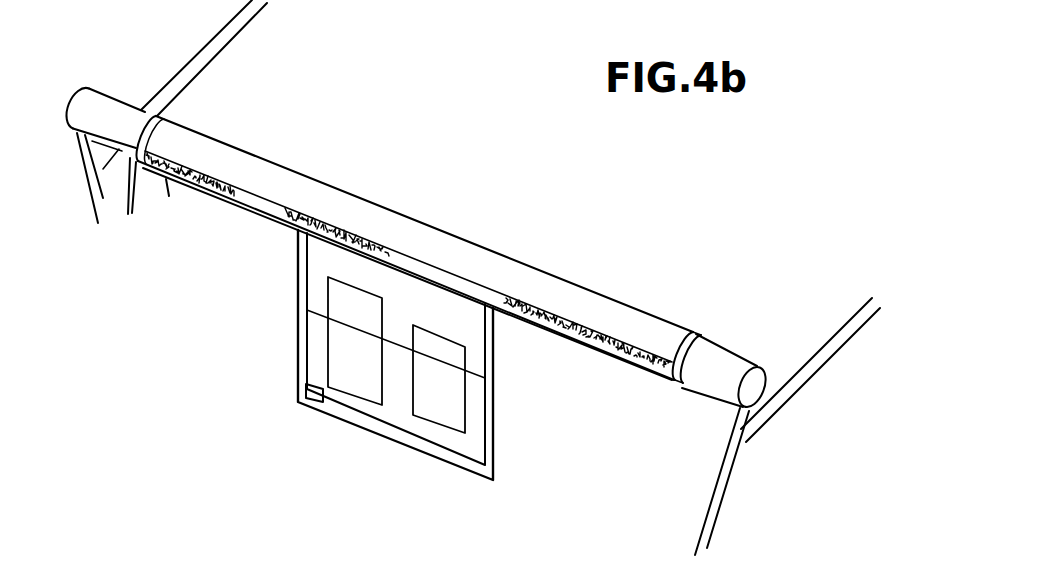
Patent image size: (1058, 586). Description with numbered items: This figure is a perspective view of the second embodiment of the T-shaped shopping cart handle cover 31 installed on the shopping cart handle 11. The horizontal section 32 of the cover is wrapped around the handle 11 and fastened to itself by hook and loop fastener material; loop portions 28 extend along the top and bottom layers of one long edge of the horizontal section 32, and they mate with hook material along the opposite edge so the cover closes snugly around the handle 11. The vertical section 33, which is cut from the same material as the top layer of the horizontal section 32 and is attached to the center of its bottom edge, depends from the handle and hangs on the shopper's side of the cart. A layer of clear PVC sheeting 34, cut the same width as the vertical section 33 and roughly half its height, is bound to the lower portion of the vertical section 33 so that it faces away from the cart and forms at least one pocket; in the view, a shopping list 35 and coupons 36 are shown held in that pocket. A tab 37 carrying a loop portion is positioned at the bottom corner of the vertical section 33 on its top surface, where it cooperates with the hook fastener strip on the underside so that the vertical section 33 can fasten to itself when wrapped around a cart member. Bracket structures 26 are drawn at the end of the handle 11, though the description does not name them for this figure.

The shopping cart handle 11 is at (719, 369).
The mounting brackets 26 is at (160, 181).
The loop portions 28 is at (268, 205).
The T-shaped shopping cart handle cover 31 is at (440, 200).
The horizontal section 32 is at (547, 293).
The vertical section 33 is at (449, 317).
The PVC sheeting 34 is at (405, 415).
The shopping list 35 is at (338, 286).
The coupons 36 is at (452, 352).
The tab 37 is at (307, 402).